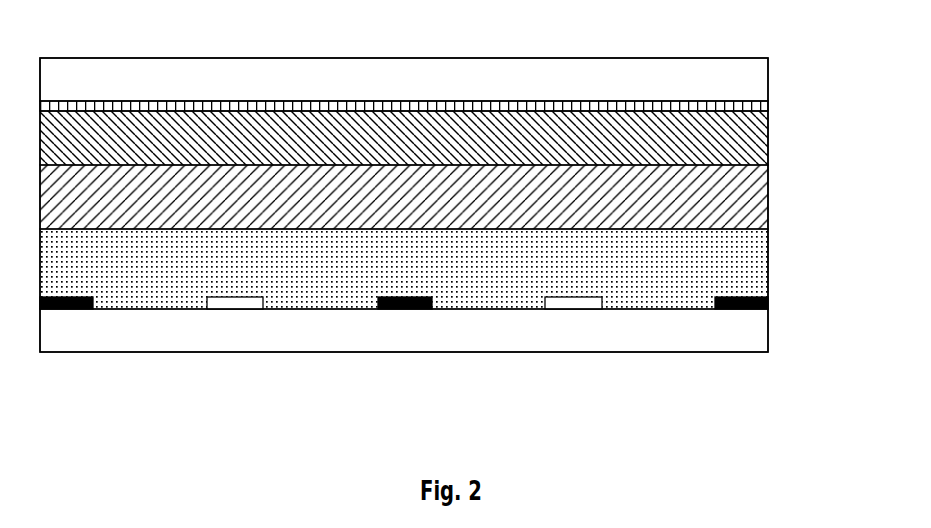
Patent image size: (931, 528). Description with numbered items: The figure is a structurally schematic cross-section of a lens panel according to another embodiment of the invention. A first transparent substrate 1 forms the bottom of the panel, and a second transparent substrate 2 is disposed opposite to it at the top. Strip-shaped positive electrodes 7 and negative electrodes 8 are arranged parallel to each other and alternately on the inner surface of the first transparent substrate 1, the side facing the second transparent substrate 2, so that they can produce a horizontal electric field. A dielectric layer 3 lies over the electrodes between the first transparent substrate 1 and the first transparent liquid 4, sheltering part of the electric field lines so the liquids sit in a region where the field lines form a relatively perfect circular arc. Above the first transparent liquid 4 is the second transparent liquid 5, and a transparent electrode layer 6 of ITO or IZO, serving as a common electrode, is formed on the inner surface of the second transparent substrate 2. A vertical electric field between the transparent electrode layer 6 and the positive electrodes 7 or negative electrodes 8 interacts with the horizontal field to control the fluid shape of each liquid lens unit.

The first transparent substrate 1 is at (742, 335).
The second transparent substrate 2 is at (742, 70).
The dielectric layer 3 is at (740, 266).
The first transparent liquid 4 is at (742, 202).
The second transparent liquid 5 is at (742, 148).
The transparent electrode layer 6 is at (742, 108).
The positive electrodes 7 is at (70, 310).
The negative electrodes 8 is at (232, 303).